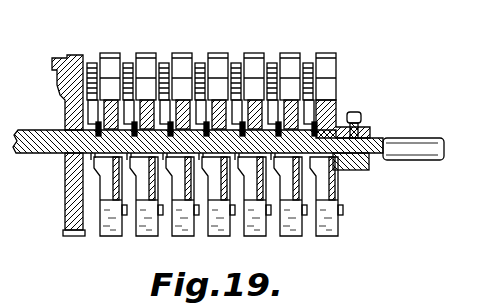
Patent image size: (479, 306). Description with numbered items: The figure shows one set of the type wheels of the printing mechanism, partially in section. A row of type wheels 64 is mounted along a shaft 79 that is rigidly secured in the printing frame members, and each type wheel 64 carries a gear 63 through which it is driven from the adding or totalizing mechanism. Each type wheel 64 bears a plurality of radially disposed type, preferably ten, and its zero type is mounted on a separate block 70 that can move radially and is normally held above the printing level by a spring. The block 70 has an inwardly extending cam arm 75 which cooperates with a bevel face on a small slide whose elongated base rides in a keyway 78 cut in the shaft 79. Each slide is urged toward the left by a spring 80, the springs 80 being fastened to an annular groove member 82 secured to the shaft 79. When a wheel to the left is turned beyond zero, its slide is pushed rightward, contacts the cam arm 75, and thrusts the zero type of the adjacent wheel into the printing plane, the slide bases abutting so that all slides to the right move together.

The gear 63 is at (92, 62).
The type wheel 64 is at (111, 52).
The block 70 is at (108, 237).
The cam arm 75 is at (93, 180).
The keyway 78 is at (80, 156).
The shaft 79 is at (378, 138).
The spring 80 is at (334, 172).
The annular groove member 82 is at (334, 110).